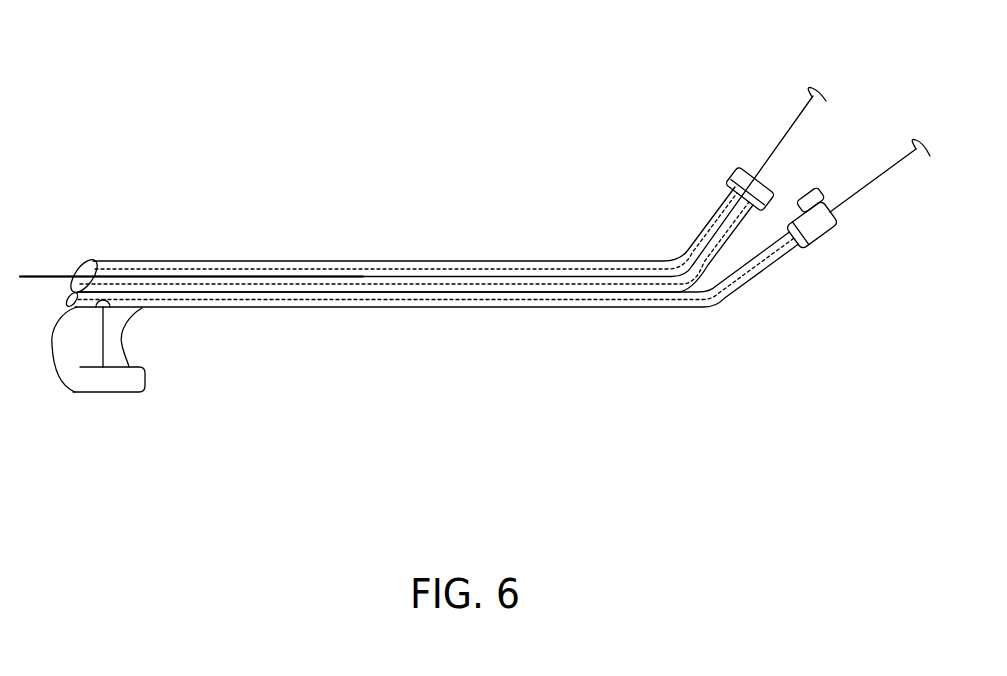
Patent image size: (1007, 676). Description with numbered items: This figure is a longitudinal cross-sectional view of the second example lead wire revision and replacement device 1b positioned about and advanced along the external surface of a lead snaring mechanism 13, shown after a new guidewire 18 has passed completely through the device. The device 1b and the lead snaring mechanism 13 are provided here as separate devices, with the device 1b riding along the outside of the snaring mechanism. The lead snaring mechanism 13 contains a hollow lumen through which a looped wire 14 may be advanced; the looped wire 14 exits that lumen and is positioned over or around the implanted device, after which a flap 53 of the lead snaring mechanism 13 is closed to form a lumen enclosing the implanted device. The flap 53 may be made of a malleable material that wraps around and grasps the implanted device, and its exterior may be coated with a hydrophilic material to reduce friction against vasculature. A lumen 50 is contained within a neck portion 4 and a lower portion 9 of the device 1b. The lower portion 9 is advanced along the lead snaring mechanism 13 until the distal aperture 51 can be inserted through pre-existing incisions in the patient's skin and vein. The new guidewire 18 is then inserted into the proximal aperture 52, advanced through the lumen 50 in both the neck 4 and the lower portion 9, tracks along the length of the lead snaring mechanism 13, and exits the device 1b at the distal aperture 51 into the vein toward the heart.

The lead wire revision and replacement device 1b is at (196, 182).
The neck portion 4 is at (658, 192).
The lower portion 9 is at (405, 258).
The lead snaring mechanism 13 is at (382, 309).
The looped wire 14 is at (105, 327).
The new guidewire 18 is at (678, 12).
The lumen 50 is at (312, 228).
The distal aperture 51 is at (77, 264).
The proximal aperture 52 is at (677, 122).
The flap 53 is at (65, 388).